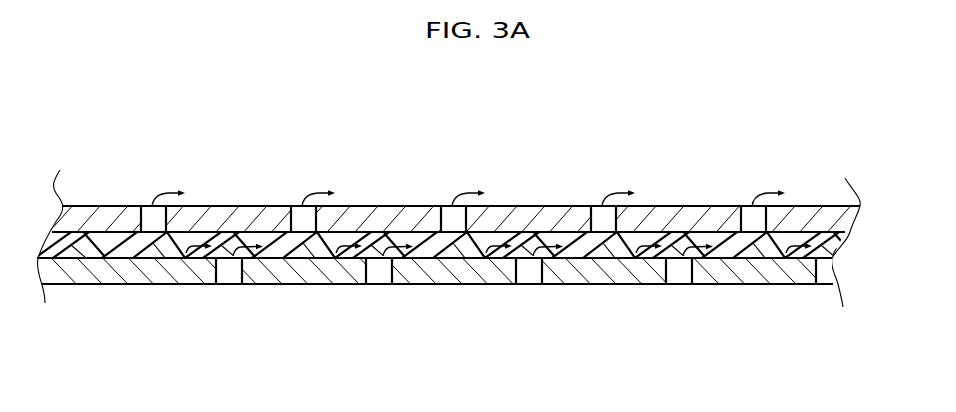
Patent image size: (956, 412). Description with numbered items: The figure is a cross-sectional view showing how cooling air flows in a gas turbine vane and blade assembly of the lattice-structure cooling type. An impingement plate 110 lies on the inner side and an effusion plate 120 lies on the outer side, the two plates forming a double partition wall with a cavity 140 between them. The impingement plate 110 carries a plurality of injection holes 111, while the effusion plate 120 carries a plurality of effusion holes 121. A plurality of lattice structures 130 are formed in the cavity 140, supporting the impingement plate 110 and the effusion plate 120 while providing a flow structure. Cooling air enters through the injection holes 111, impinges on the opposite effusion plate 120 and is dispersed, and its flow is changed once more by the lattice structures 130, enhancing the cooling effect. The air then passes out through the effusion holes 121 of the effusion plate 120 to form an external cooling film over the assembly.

The impingement plate 110 is at (82, 266).
The injection holes 111 is at (226, 247).
The effusion plate 120 is at (86, 216).
The effusion holes 121 is at (154, 218).
The lattice structures 130 is at (118, 250).
The cavity 140 is at (800, 262).